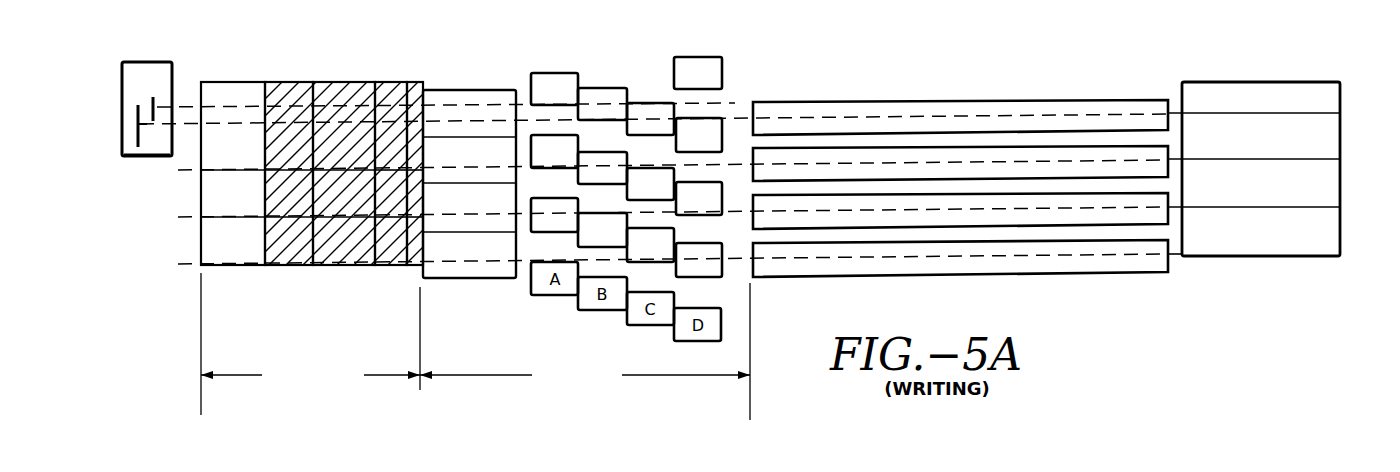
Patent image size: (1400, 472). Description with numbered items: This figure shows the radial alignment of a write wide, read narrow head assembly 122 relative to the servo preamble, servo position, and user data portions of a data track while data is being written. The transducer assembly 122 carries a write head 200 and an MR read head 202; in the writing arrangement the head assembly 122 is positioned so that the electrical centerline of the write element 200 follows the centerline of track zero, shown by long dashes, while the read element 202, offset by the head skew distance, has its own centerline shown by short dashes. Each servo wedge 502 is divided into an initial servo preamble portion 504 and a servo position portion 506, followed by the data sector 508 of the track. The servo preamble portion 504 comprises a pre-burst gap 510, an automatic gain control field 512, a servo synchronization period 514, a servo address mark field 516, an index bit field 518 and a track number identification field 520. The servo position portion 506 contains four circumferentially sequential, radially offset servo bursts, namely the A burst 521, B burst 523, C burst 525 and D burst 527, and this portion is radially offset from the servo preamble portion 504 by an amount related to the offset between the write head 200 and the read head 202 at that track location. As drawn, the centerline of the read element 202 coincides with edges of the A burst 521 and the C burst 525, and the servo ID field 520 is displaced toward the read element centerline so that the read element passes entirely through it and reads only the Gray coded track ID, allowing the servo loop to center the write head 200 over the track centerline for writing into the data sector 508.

The write head 200 is at (137, 108).
The MR read head 202 is at (157, 103).
The head assembly 122 is at (156, 152).
The pre-burst gap 510 is at (239, 92).
The automatic gain control field 512 is at (292, 90).
The servo synchronization period 514 is at (350, 90).
The servo address mark field 516 is at (392, 90).
The index bit field 518 is at (417, 84).
The track number identification field 520 is at (478, 102).
The A burst 521 is at (553, 79).
The B burst 523 is at (608, 91).
The C burst 525 is at (652, 105).
The D burst 527 is at (697, 62).
The data sector 508 is at (935, 96).
The servo wedge 502 is at (1253, 291).
The servo preamble portion 504 is at (310, 344).
The servo position portion 506 is at (585, 351).